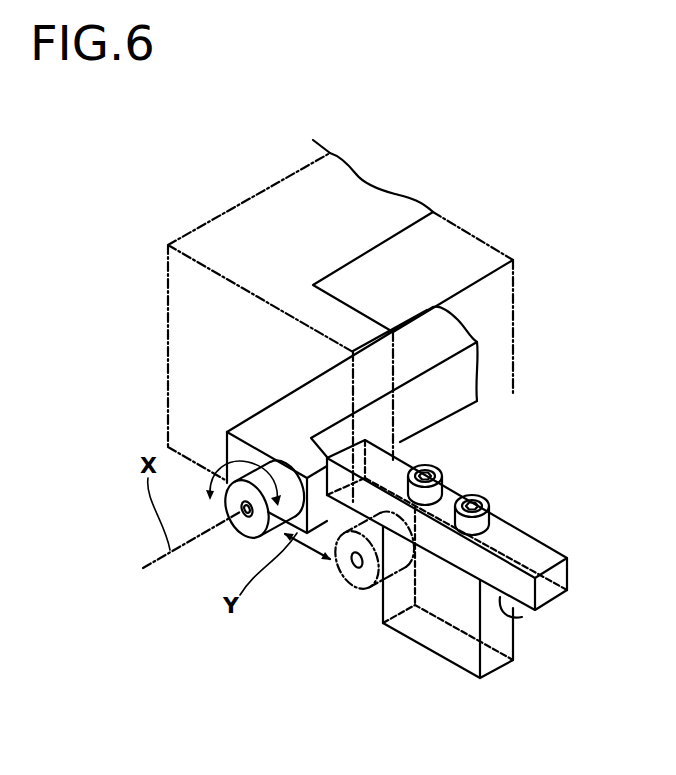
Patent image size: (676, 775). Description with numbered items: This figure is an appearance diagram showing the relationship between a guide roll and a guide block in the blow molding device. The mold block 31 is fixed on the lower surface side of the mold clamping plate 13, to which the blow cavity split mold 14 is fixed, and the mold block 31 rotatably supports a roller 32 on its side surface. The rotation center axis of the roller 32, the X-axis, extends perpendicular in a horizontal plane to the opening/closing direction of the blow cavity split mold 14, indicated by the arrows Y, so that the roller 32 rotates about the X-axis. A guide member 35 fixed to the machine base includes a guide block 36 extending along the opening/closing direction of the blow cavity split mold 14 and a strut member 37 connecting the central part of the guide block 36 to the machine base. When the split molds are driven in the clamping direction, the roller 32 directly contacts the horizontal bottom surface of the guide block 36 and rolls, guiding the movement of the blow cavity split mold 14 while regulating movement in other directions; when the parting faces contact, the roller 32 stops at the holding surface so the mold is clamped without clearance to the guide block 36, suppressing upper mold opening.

The mold clamping plate 13 is at (290, 213).
The blow cavity split mold 14 is at (463, 235).
The mold block 31 is at (445, 392).
The roller 32 is at (245, 537).
The guide member 35 is at (417, 627).
The guide block 36 is at (540, 551).
The strut member 37 is at (514, 614).